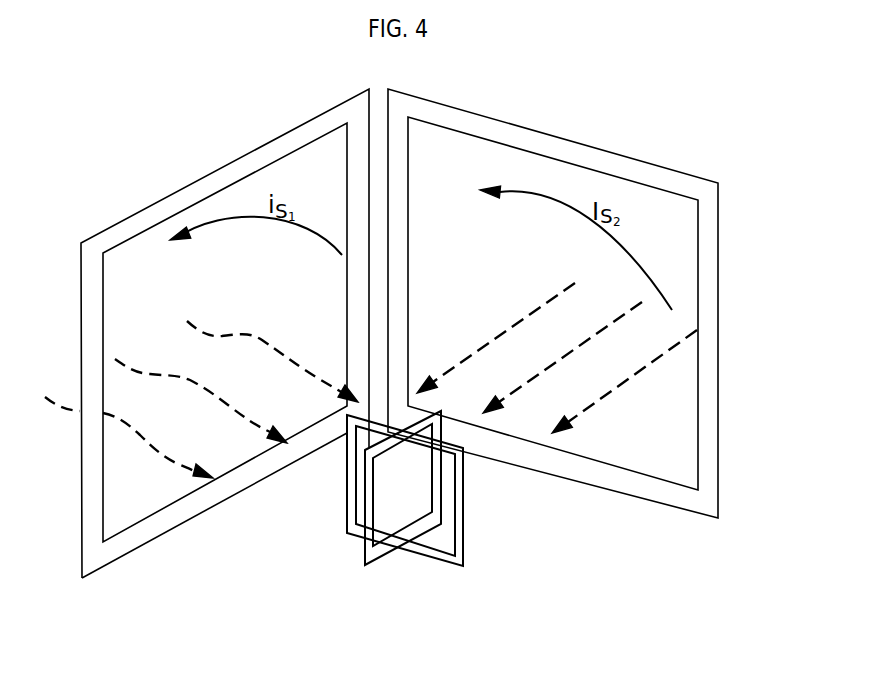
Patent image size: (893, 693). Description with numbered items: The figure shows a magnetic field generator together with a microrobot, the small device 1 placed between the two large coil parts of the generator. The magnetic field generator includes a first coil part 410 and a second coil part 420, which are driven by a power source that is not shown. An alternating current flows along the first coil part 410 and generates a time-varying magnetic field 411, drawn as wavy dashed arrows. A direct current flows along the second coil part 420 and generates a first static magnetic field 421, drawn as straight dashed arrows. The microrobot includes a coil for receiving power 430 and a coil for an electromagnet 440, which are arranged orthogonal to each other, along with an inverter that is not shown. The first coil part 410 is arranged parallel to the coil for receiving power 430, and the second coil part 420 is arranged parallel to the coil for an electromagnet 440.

The electronic device 1 is at (562, 342).
The first coil part 410 is at (223, 165).
The time-varying magnetic field 411 is at (143, 437).
The second coil part 420 is at (553, 135).
The first static magnetic field 421 is at (642, 370).
The coil for receiving power 430 is at (365, 567).
The coil for an electromagnet 440 is at (462, 567).